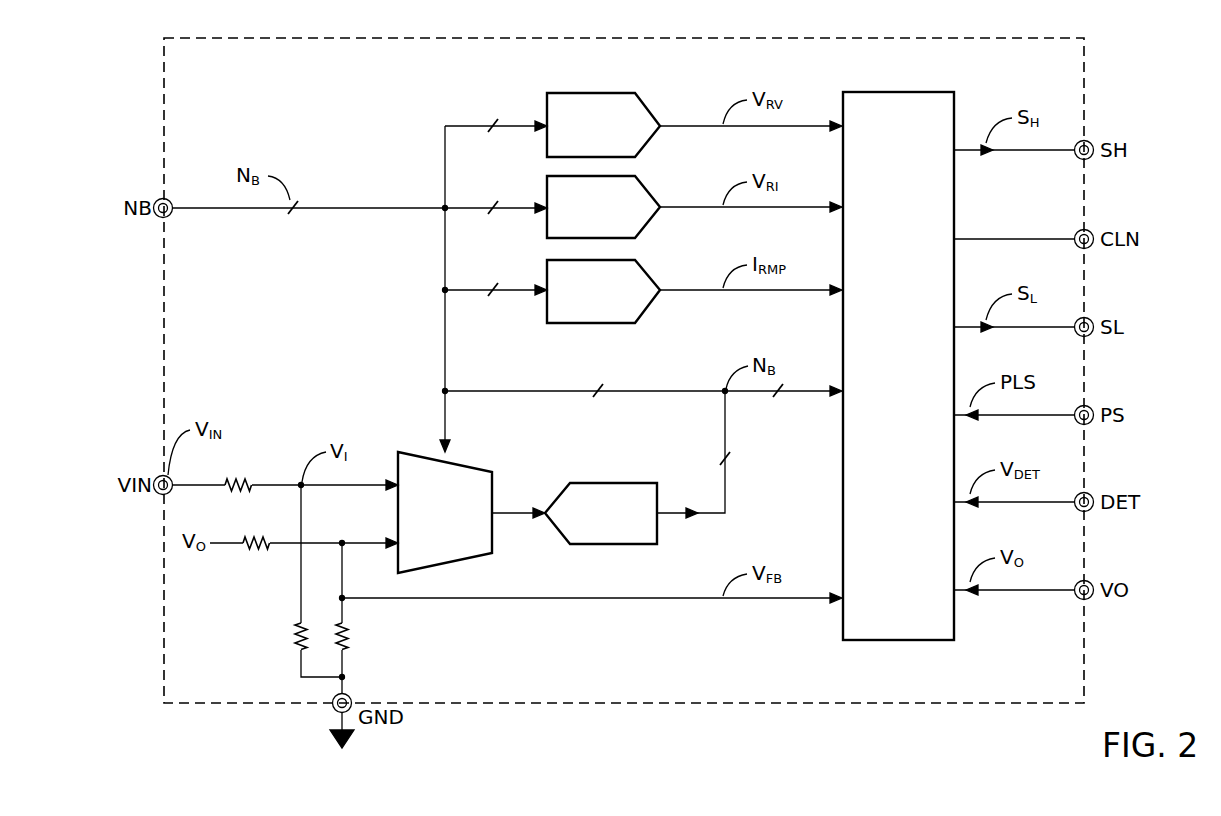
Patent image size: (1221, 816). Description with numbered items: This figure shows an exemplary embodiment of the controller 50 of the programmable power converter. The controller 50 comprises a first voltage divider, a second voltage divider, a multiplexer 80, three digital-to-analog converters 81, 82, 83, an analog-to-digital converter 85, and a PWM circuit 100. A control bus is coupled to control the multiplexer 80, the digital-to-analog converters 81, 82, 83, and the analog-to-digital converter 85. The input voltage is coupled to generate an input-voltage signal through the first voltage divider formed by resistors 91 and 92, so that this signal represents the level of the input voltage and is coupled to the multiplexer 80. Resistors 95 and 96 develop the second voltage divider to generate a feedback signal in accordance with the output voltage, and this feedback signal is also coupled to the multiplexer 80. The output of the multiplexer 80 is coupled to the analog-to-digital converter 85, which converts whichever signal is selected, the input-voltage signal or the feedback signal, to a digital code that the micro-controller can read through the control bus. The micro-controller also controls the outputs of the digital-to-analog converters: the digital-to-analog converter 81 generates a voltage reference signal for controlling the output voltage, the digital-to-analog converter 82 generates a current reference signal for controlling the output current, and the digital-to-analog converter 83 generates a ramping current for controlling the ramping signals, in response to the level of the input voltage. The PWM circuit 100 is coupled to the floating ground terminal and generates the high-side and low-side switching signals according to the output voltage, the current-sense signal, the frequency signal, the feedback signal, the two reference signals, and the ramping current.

The controller 50 is at (164, 130).
The multiplexer 80 is at (474, 462).
The digital-to-analog converter 81 is at (650, 106).
The digital-to-analog converter 82 is at (650, 188).
The digital-to-analog converter 83 is at (650, 271).
The analog-to-digital converter 85 is at (608, 481).
The resistor 91 is at (238, 478).
The resistor 92 is at (290, 636).
The resistor 95 is at (254, 560).
The resistor 96 is at (352, 635).
The PWM circuit 100 is at (882, 90).